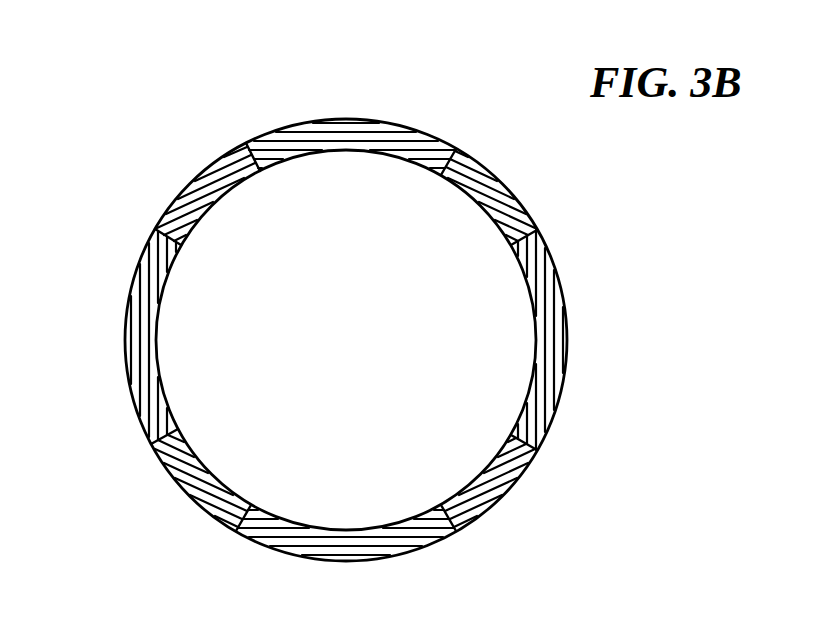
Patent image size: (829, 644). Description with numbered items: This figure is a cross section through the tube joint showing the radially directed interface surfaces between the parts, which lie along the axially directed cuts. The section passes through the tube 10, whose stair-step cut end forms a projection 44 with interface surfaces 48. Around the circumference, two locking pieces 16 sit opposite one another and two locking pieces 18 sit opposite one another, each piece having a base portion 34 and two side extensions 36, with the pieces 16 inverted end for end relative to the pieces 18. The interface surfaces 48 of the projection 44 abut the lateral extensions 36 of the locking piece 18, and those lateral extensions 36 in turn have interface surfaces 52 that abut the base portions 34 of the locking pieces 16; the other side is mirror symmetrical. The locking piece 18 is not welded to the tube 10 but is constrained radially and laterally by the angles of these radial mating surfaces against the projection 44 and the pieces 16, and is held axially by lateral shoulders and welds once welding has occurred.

The tube 10 is at (132, 280).
The locking piece 16 is at (366, 121).
The locking piece 18 is at (294, 293).
The base portion 34 is at (321, 121).
The side extension 36 is at (183, 180).
The projection 44 is at (135, 340).
The axial cut surface 48 is at (160, 232).
The interface surface 52 is at (248, 146).